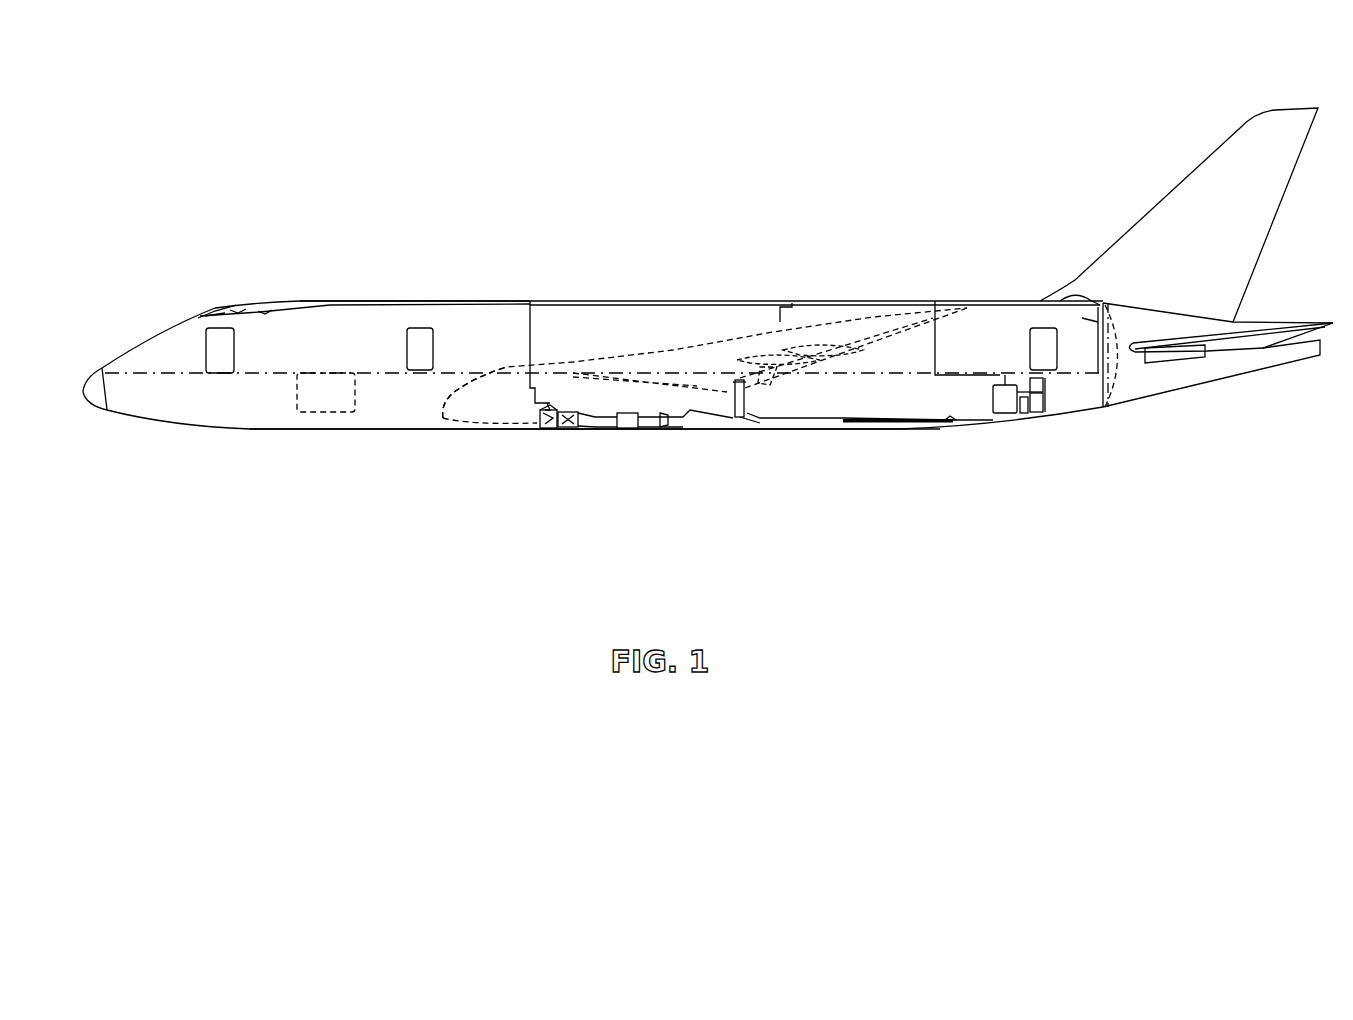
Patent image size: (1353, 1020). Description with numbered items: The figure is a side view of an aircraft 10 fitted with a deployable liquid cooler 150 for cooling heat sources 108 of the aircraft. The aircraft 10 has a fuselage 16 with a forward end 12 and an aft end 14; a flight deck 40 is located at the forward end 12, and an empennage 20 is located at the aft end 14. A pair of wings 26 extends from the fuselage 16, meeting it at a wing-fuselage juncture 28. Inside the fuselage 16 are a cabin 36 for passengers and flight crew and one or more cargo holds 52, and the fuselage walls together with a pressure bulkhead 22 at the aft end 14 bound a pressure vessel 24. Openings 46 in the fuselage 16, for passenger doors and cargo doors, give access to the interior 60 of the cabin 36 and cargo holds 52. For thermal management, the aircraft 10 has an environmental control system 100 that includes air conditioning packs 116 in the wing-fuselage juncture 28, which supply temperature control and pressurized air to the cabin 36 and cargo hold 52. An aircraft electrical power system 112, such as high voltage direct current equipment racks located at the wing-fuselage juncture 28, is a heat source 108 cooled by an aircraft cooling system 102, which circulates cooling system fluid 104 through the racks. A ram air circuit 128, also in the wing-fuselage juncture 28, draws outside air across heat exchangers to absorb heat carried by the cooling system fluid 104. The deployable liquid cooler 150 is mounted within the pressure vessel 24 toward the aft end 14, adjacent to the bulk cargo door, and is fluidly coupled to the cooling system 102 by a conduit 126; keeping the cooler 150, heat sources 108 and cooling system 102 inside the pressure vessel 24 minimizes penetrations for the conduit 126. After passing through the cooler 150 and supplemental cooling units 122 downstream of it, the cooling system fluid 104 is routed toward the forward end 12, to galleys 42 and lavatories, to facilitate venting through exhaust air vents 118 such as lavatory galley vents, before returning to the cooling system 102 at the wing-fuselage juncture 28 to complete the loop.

The aircraft 10 is at (205, 150).
The forward end 12 is at (82, 390).
The aft end 14 is at (1273, 360).
The fuselage 16 is at (578, 296).
The empennage 20 is at (1253, 258).
The pressure bulkhead 22 is at (1117, 380).
The pressure vessel 24 is at (637, 298).
The wings 26 is at (858, 327).
The wing-fuselage juncture 28 is at (452, 415).
The cabin 36 is at (290, 340).
The flight deck 40 is at (140, 348).
The galleys 42 is at (200, 310).
The openings 46 is at (212, 368).
The cargo holds 52 is at (255, 395).
The interior 60 is at (685, 320).
The environmental control system 100 is at (547, 428).
The aircraft cooling system 102 is at (560, 430).
The cooling system fluid 104 is at (912, 423).
The heat source 108 is at (737, 417).
The aircraft electrical power system 112 is at (758, 423).
The air conditioning packs 116 is at (538, 425).
The exhaust air vents 118 is at (205, 316).
The supplemental cooling units 122 is at (1047, 400).
The conduit 126 is at (530, 343).
The ram air circuit 128 is at (563, 430).
The deployable liquid cooler 150 is at (1025, 420).